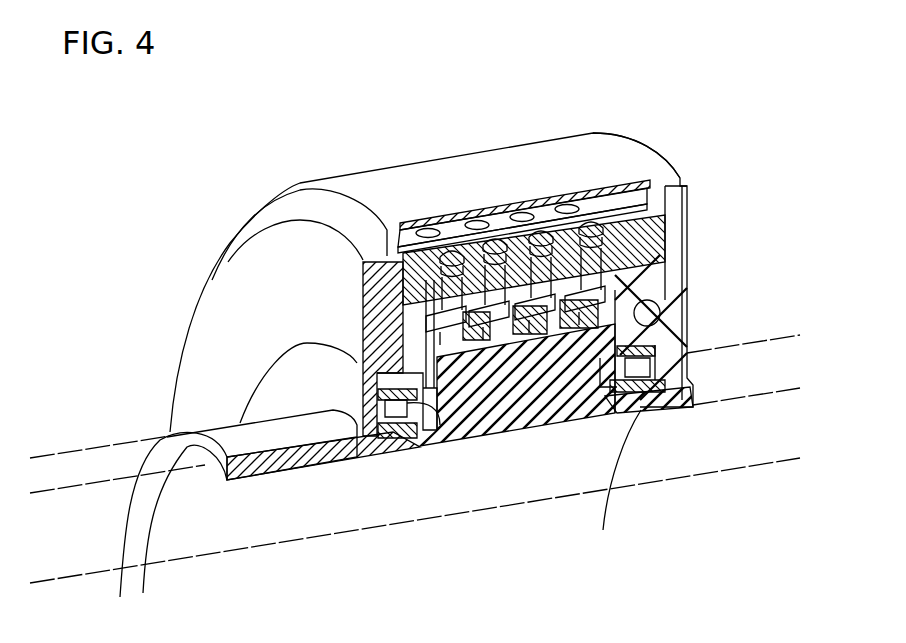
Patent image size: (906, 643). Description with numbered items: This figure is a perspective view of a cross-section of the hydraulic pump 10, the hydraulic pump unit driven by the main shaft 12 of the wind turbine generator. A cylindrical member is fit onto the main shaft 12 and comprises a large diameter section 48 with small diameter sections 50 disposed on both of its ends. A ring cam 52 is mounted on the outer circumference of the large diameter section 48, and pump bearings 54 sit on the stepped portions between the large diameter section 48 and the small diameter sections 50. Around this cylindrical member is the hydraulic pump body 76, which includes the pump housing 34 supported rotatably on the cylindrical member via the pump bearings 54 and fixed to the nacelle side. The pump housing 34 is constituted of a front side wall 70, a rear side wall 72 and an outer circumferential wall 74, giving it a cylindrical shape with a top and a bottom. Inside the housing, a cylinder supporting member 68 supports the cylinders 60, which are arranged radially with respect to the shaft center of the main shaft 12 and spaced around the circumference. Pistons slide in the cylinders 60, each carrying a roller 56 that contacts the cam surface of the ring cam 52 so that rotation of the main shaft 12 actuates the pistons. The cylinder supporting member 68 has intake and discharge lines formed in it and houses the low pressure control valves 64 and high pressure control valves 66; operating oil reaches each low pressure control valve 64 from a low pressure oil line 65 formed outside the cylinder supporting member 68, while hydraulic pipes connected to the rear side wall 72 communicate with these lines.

The hydraulic pump 10 is at (708, 143).
The main shaft 12 is at (764, 337).
The pump housing 34 is at (497, 146).
The large diameter section 48 is at (528, 395).
The small diameter section 50 is at (258, 488).
The ring cam 52 is at (665, 333).
The pump bearing 54 is at (396, 442).
The roller 56 is at (660, 308).
The cylinder 60 is at (682, 278).
The low pressure control valve 64 is at (678, 254).
The high pressure control valve 66 is at (676, 255).
The low pressure oil line 65 is at (616, 205).
The cylinder supporting member 68 is at (652, 215).
The front side wall 70 is at (188, 336).
The rear side wall 72 is at (690, 228).
The outer circumferential wall 74 is at (378, 166).
The hydraulic pump body 76 is at (697, 208).